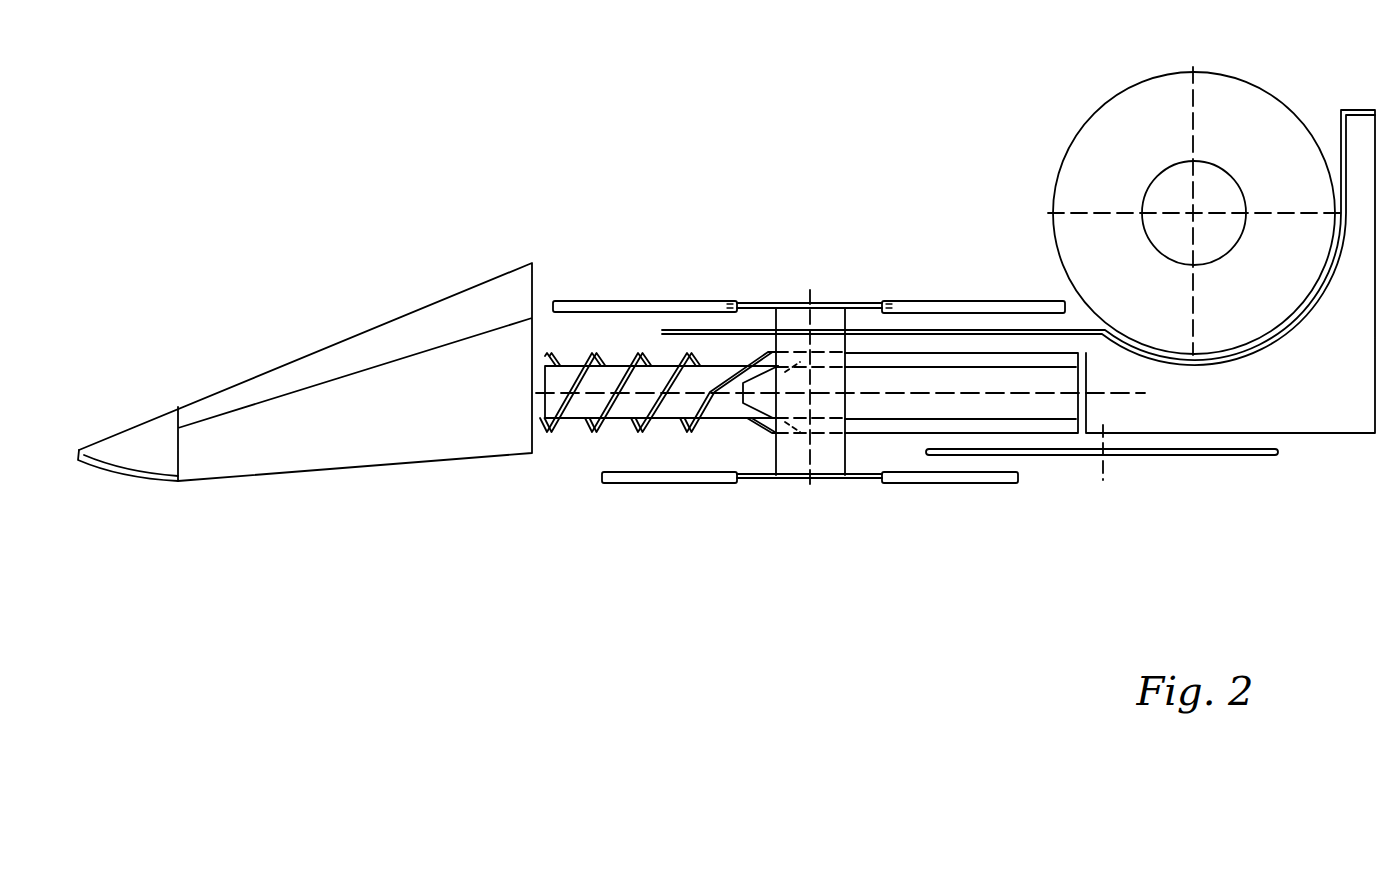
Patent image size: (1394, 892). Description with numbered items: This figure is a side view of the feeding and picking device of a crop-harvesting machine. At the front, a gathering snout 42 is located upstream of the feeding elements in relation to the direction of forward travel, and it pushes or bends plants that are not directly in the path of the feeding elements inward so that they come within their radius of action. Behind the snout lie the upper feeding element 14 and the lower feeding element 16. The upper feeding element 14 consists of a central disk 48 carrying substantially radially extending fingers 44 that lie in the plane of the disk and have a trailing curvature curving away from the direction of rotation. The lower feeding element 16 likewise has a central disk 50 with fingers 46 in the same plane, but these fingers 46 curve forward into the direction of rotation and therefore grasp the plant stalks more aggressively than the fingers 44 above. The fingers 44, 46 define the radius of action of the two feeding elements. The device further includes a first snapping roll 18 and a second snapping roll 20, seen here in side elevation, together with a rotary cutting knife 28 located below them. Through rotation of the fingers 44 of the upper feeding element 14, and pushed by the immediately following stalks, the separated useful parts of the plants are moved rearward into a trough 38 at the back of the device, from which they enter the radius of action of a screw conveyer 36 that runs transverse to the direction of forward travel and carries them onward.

The upper feeding element 14 is at (755, 284).
The lower feeding element 16 is at (712, 488).
The first snapping roll 18 is at (583, 405).
The second snapping roll 20 is at (945, 403).
The rotary cutting knife 28 is at (1238, 453).
The screw conveyer 36 is at (1290, 128).
The trough 38 is at (1305, 315).
The gathering snout 42 is at (252, 390).
The fingers 44 is at (612, 305).
The fingers 46 is at (637, 478).
The central disk 48 is at (793, 308).
The central disk 50 is at (875, 480).